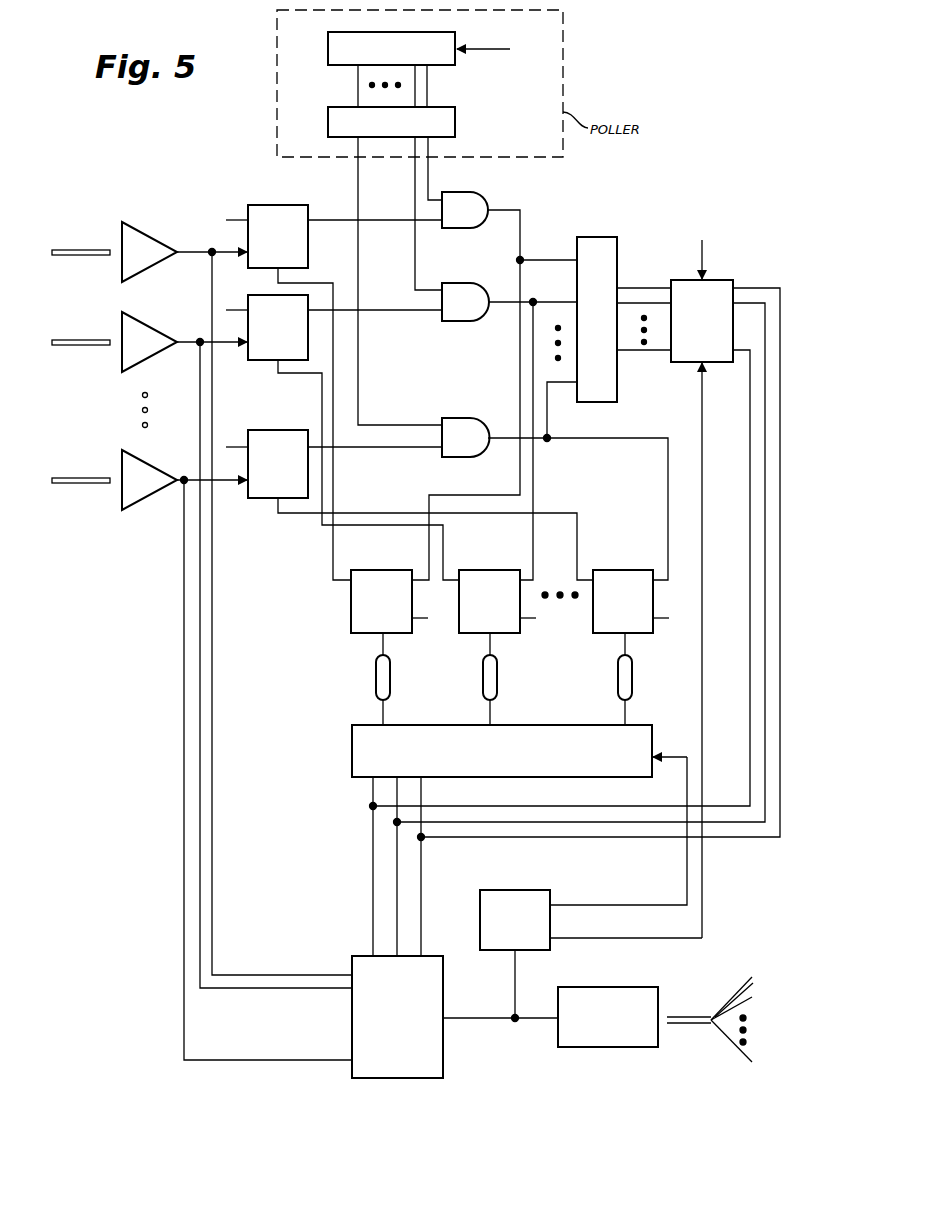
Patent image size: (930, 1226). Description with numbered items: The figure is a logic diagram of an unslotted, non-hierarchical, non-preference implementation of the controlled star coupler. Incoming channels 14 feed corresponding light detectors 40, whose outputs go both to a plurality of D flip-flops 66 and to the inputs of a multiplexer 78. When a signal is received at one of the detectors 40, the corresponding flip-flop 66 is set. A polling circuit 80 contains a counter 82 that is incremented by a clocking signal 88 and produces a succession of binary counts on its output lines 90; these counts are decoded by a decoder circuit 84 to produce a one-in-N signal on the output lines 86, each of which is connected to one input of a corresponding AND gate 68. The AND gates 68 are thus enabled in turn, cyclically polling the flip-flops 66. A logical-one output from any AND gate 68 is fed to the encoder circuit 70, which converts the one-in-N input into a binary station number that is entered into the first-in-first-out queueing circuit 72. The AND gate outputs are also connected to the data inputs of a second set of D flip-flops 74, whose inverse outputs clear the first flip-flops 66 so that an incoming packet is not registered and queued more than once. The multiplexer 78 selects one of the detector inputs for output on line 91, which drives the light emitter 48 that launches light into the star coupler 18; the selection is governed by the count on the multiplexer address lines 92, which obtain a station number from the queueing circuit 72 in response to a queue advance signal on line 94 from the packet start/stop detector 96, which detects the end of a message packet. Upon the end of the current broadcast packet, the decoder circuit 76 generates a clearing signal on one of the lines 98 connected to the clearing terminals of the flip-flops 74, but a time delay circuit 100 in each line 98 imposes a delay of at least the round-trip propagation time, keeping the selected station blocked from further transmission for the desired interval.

The incoming channels 14 is at (68, 256).
The star coupler 18 is at (730, 978).
The light detectors 40 is at (150, 268).
The light emitter 48 is at (580, 1047).
The D flip-flops 66 is at (290, 205).
The AND gates 68 is at (490, 199).
The encoder circuit 70 is at (602, 237).
The first-in-first-out queueing circuit 72 is at (733, 282).
The D flip-flops 74 is at (385, 570).
The decoder circuit 76 is at (352, 768).
The multiplexer 78 is at (443, 1068).
The polling circuit 80 is at (563, 15).
The counter 82 is at (447, 32).
The decoder circuit 84 is at (455, 125).
The output lines 86 is at (428, 172).
The clocking signal 88 is at (480, 49).
The output lines 90 is at (428, 93).
The output line 91 is at (470, 1020).
The multiplexer address lines 92 is at (421, 872).
The queue advance line 94 is at (702, 705).
The packet start/stop detector 96 is at (500, 952).
The clearing lines 98 is at (383, 645).
The time delay circuit 100 is at (376, 686).